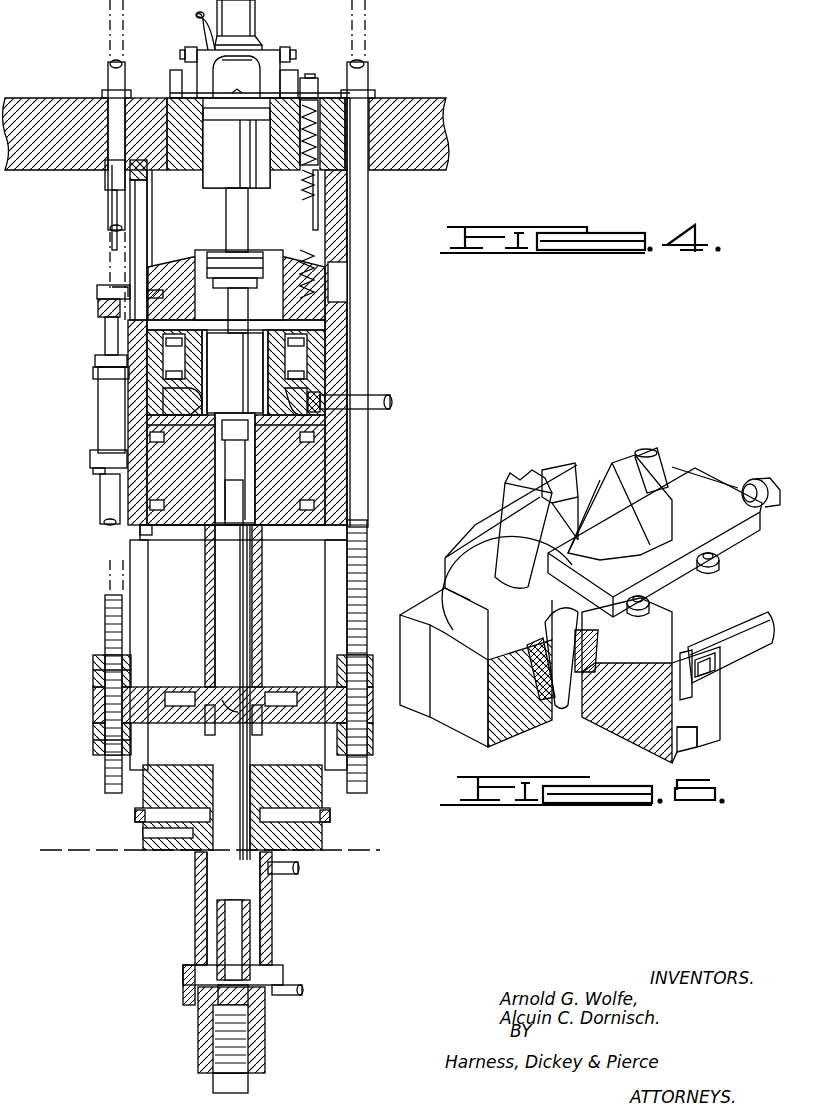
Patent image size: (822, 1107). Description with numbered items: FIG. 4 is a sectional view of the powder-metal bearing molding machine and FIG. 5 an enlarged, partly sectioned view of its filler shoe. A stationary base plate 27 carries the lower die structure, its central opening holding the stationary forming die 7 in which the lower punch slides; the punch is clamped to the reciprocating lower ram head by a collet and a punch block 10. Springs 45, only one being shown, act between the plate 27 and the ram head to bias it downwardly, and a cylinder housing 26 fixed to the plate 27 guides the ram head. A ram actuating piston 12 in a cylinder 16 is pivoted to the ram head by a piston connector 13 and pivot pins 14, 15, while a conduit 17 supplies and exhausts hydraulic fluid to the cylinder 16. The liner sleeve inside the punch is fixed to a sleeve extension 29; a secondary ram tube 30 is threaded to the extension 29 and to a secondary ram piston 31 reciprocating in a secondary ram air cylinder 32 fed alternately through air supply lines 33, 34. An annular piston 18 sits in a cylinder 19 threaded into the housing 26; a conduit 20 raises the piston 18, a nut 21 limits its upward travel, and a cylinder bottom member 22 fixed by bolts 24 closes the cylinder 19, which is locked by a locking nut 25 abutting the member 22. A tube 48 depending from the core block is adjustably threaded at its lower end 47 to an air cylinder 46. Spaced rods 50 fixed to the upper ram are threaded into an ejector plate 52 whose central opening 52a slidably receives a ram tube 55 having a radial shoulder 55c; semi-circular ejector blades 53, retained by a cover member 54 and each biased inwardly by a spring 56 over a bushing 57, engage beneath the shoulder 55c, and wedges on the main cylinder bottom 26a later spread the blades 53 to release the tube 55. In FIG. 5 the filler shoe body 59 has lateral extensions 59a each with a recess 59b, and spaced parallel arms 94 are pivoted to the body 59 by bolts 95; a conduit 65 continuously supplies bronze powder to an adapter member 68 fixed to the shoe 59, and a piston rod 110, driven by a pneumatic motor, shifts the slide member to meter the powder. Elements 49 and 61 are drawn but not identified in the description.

In FIG. 4, the stationary forming die 7 is at (205, 178).
In FIG. 4, the punch block 10 is at (212, 258).
In FIG. 4, the ram actuating piston 12 is at (104, 332).
In FIG. 4, the piston connector 13 is at (97, 310).
In FIG. 4, the pivot pin 14 is at (96, 293).
In FIG. 4, the pivot pin 15 is at (115, 275).
In FIG. 4, the cylinder 16 is at (97, 400).
In FIG. 4, the conduit 17 is at (108, 500).
In FIG. 4, the annular piston 18 is at (360, 390).
In FIG. 4, the cylinder 19 is at (322, 362).
In FIG. 4, the conduit 20 is at (392, 406).
In FIG. 4, the nut 21 is at (312, 340).
In FIG. 4, the cylinder bottom member 22 is at (330, 425).
In FIG. 4, the bolts 24 is at (132, 425).
In FIG. 4, the locking nut 25 is at (322, 462).
In FIG. 4, the cylinder housing 26 is at (345, 498).
In FIG. 4, the main cylinder bottom 26a is at (330, 592).
In FIG. 4, the stationary base plate 27 is at (430, 135).
In FIG. 4, the sleeve extension 29 is at (263, 262).
In FIG. 4, the secondary ram tube 30 is at (226, 592).
In FIG. 4, the secondary ram piston 31 is at (262, 953).
In FIG. 4, the secondary ram air cylinder 32 is at (270, 916).
In FIG. 4, the air supply line 33 is at (300, 870).
In FIG. 4, the air supply line 34 is at (304, 990).
In FIG. 4, the springs 45 is at (315, 165).
In FIG. 4, the air cylinder 46 is at (266, 1040).
In FIG. 4, the lower end of tube 47 is at (238, 1078).
In FIG. 4, the tube 48 is at (238, 497).
In FIG. 4, the threaded rod 49 is at (90, 688).
In FIG. 4, the spaced rods 50 is at (107, 214).
In FIG. 4, the ejector plate 52 is at (370, 698).
In FIG. 4, the central opening 52a is at (236, 698).
In FIG. 4, the ejector blades 53 is at (278, 686).
In FIG. 4, the cover member 54 is at (300, 690).
In FIG. 4, the ram tube 55 is at (262, 610).
In FIG. 4, the radial shoulder 55c is at (210, 728).
In FIG. 4, the spring 56 is at (265, 722).
In FIG. 4, the bushing 57 is at (255, 715).
In FIG. 5, the filler shoe body 59 is at (478, 738).
In FIG. 5, the lateral extensions 59a is at (450, 560).
In FIG. 5, the recess 59b is at (700, 762).
In FIG. 5, the die insert 61 is at (536, 480).
In FIG. 5, the conduit 65 is at (652, 450).
In FIG. 5, the adapter member 68 is at (665, 538).
In FIG. 5, the spaced parallel arms 94 is at (745, 665).
In FIG. 5, the bolts 95 is at (690, 650).
In FIG. 5, the piston rod 110 is at (775, 478).